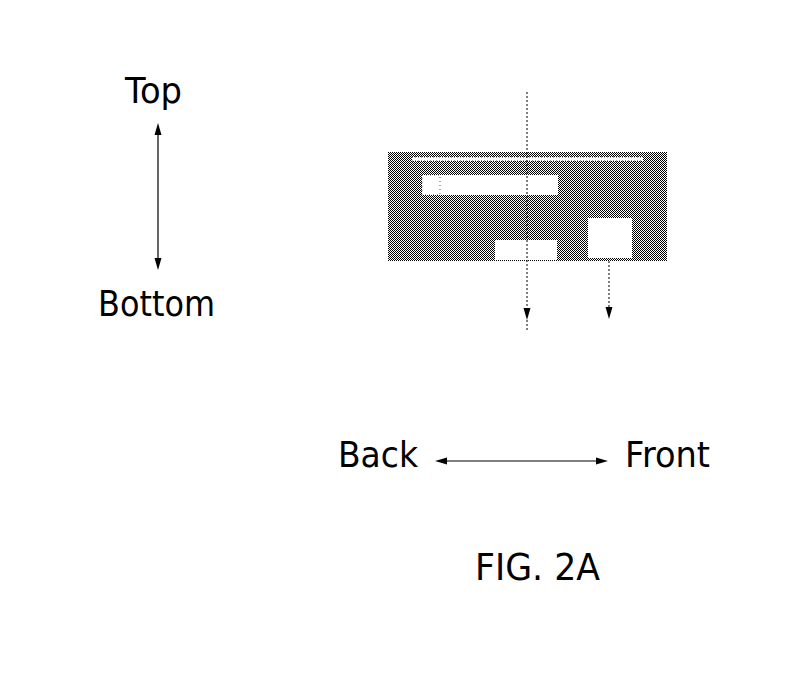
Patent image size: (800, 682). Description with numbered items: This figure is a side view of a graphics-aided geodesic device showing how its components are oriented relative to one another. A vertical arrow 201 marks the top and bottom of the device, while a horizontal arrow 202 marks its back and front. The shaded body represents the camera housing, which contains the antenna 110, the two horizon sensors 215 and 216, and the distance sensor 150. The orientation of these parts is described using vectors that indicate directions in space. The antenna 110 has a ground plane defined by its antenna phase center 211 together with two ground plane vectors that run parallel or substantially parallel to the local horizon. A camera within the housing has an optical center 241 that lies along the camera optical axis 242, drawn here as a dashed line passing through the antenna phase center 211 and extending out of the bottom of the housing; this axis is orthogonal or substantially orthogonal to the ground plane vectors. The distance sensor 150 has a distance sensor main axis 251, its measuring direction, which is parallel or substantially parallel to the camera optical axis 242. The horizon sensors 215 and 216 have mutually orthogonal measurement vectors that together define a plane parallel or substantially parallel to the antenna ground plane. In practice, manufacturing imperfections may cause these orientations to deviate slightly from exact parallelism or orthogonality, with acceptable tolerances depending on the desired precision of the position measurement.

The antenna 110 is at (492, 155).
The antenna phase center 211 is at (527, 155).
The horizon sensor 215 is at (465, 195).
The horizon sensor 216 is at (425, 182).
The optical center 241 is at (527, 260).
The camera optical axis 242 is at (523, 298).
The distance sensor 150 is at (603, 243).
The distance sensor main axis 251 is at (613, 282).
The arrow 201 is at (137, 196).
The arrow 202 is at (521, 449).